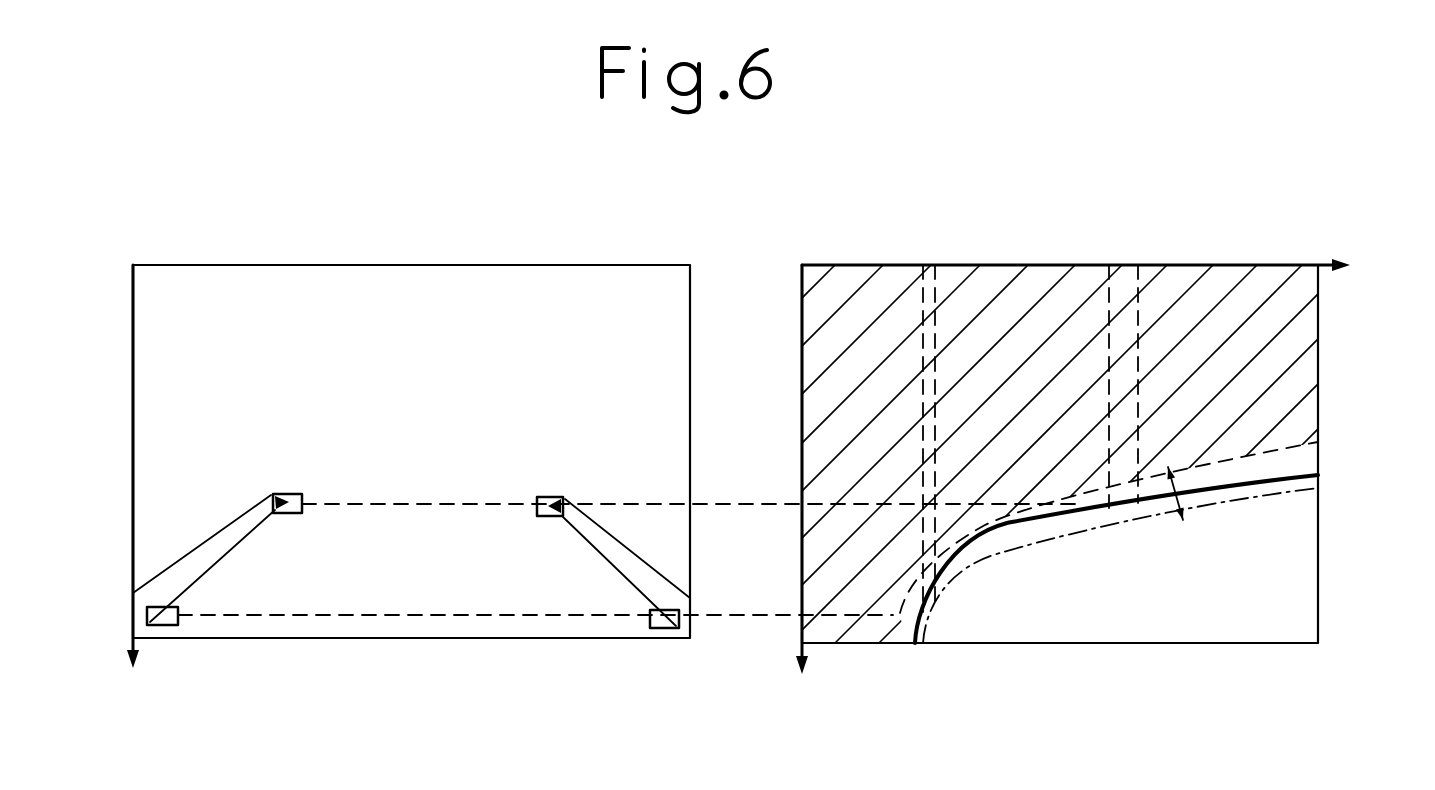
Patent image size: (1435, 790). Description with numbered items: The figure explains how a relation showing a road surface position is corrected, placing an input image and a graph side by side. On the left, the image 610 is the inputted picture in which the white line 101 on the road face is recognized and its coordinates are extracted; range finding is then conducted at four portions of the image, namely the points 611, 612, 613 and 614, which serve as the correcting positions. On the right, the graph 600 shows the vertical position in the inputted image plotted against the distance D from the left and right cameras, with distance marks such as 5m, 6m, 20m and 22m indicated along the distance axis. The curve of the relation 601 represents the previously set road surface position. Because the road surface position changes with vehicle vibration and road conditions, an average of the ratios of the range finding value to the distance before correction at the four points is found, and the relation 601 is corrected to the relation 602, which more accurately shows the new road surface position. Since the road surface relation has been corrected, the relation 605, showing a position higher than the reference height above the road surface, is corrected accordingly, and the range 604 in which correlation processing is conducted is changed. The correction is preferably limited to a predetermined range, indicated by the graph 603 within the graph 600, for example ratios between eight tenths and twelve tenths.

The image 610 is at (418, 265).
The white line 101 is at (192, 543).
The point 611 is at (275, 494).
The point 612 is at (178, 616).
The point 613 is at (537, 503).
The point 614 is at (650, 618).
The graph 600 is at (1053, 265).
The range in which correlation processing is conducted 604 is at (1213, 285).
The distance line 5m is at (923, 265).
The distance line 6m is at (935, 265).
The distance line 20m is at (1109, 265).
The distance line 22m is at (1138, 265).
The relation showing a position higher than the reference value of height from the r 605 is at (1318, 442).
The relation showing a previously set road surface position 601 is at (1076, 526).
The relation showing a new road surface position 602 is at (1002, 553).
The graph (correction range) 603 is at (1203, 484).